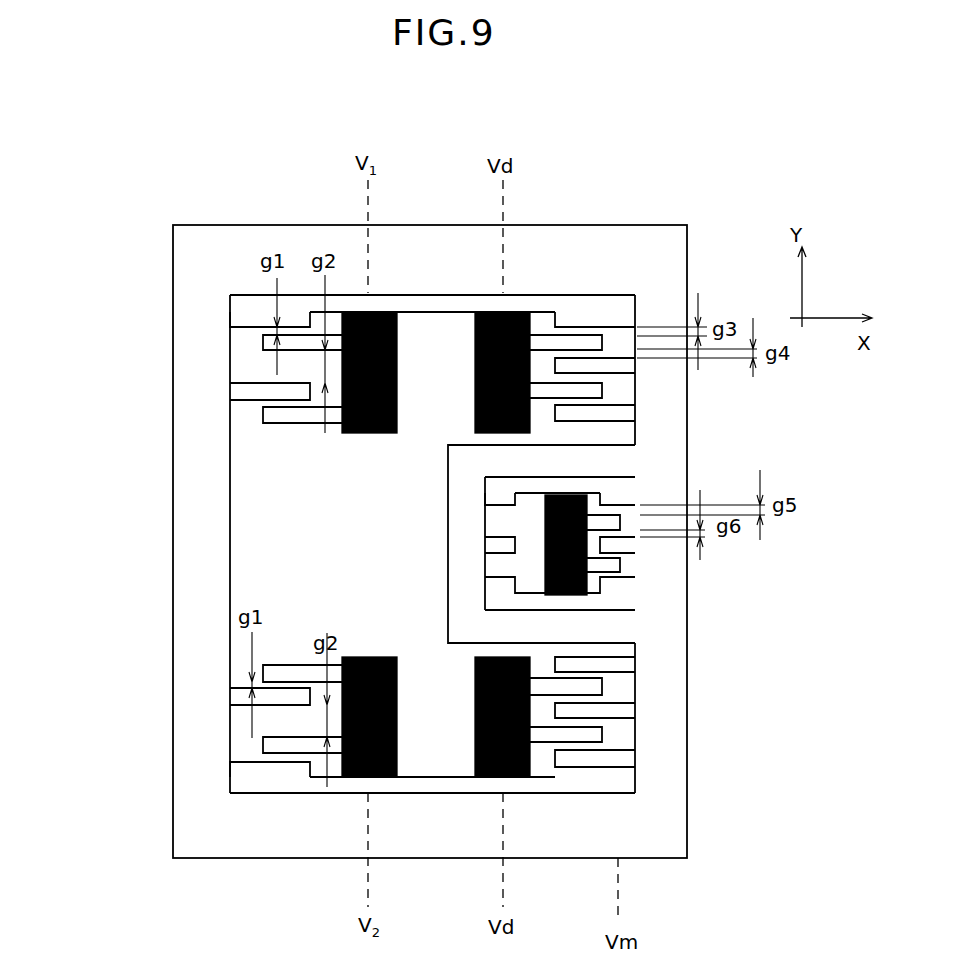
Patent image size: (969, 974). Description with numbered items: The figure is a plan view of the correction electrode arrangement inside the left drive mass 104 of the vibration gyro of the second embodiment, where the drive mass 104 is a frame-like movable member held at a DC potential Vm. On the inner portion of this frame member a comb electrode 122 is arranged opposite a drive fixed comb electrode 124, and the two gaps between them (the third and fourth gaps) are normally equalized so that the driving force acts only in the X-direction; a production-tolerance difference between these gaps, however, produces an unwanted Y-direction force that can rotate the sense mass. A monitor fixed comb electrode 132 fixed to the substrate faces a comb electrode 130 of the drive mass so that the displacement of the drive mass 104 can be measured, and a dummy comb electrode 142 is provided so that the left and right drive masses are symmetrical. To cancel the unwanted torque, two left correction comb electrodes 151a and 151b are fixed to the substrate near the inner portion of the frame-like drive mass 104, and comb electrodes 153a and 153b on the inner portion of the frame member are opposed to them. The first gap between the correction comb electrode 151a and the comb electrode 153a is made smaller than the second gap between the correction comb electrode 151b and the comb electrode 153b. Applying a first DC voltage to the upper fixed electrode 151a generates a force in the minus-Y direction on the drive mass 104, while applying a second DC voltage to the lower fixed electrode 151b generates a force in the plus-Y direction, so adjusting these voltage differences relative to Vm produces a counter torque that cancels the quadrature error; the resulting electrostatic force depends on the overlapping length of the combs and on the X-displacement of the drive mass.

The left drive mass 104 is at (418, 253).
The comb electrode 122 is at (613, 318).
The drive fixed comb electrode 124 is at (530, 427).
The comb electrode 130 is at (632, 588).
The monitor fixed comb electrode 132 is at (567, 595).
The dummy comb electrode 142 is at (498, 537).
The left correction comb electrode 151a is at (367, 433).
The left correction comb electrode 151b is at (360, 657).
The comb electrode 153a is at (243, 328).
The comb electrode 153b is at (235, 688).